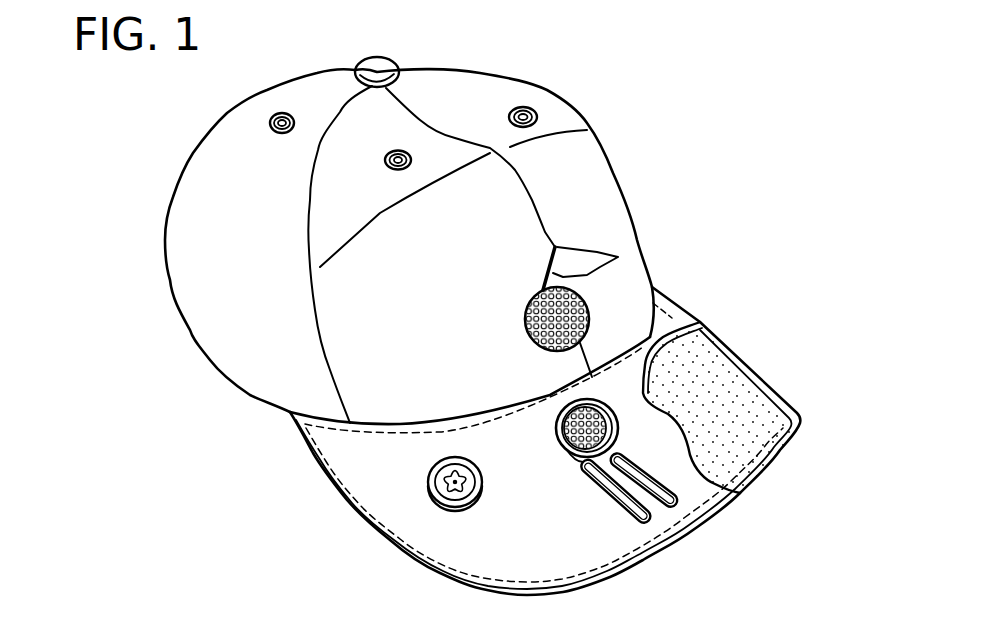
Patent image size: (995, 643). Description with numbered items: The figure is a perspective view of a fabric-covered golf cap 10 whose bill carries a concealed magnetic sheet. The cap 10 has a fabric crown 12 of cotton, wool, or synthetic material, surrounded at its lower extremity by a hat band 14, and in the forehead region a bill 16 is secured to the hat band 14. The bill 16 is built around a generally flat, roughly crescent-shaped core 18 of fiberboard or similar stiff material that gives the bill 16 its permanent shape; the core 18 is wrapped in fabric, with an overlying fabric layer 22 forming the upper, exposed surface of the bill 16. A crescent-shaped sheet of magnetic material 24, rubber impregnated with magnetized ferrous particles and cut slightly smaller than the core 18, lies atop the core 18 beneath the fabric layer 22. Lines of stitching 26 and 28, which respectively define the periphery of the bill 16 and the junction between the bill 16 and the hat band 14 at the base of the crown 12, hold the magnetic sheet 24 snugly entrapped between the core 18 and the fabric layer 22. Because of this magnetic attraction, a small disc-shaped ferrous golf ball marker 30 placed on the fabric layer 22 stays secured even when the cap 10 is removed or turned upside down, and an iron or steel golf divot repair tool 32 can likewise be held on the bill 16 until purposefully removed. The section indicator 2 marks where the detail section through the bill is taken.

The golf cap 10 is at (670, 169).
The crown 12 is at (480, 97).
The hat band 14 is at (232, 350).
The bill 16 is at (762, 347).
The core 18 is at (777, 470).
The overlying fabric layer 22 is at (617, 527).
The sheet of magnetic material 24 is at (753, 407).
The line of stitching 26 is at (395, 522).
The line of stitching 28 is at (362, 433).
The golf ball marker 30 is at (452, 472).
The golf divot repair tool 32 is at (664, 470).
The section line 2- 2 is at (500, 527).